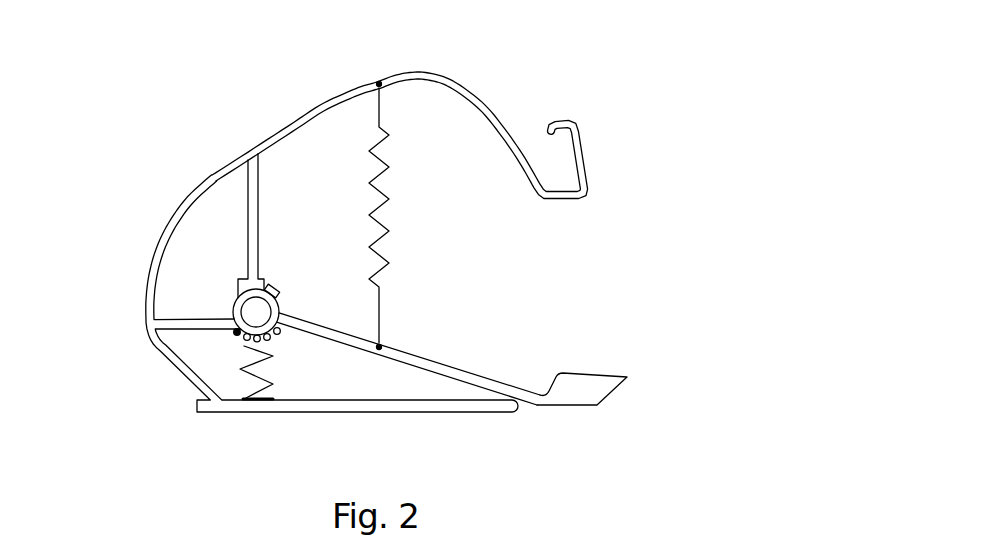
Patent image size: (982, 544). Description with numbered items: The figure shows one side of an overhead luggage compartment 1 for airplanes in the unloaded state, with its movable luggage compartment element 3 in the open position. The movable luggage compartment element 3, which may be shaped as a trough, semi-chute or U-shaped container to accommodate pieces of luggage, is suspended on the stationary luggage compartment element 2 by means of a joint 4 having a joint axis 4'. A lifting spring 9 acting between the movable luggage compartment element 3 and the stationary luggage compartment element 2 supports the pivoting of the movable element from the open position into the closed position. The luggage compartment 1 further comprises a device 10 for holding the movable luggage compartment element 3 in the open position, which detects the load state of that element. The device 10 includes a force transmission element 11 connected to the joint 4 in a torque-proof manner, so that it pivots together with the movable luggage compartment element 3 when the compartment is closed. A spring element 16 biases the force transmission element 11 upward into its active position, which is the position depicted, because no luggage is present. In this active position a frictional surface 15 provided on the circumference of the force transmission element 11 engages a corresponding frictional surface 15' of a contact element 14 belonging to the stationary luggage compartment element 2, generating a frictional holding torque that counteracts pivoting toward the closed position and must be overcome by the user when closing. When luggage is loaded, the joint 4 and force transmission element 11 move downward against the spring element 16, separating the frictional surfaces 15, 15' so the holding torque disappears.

The overhead luggage compartment 1 is at (254, 76).
The stationary luggage compartment element 2 is at (482, 110).
The movable luggage compartment element 3 is at (570, 390).
The joint 4 is at (196, 359).
The joint axis 4' is at (177, 311).
The lifting spring 9 is at (383, 237).
The device for holding the movable luggage compartment element 10 is at (214, 290).
The force transmission element 11 is at (280, 313).
The contact element 14 is at (232, 268).
The frictional surface 15 is at (275, 271).
The frictional surface of the contact element 15' is at (306, 275).
The spring element 16 is at (257, 379).